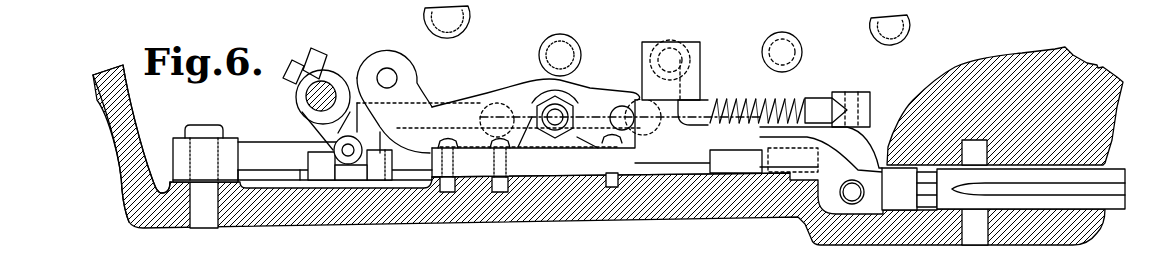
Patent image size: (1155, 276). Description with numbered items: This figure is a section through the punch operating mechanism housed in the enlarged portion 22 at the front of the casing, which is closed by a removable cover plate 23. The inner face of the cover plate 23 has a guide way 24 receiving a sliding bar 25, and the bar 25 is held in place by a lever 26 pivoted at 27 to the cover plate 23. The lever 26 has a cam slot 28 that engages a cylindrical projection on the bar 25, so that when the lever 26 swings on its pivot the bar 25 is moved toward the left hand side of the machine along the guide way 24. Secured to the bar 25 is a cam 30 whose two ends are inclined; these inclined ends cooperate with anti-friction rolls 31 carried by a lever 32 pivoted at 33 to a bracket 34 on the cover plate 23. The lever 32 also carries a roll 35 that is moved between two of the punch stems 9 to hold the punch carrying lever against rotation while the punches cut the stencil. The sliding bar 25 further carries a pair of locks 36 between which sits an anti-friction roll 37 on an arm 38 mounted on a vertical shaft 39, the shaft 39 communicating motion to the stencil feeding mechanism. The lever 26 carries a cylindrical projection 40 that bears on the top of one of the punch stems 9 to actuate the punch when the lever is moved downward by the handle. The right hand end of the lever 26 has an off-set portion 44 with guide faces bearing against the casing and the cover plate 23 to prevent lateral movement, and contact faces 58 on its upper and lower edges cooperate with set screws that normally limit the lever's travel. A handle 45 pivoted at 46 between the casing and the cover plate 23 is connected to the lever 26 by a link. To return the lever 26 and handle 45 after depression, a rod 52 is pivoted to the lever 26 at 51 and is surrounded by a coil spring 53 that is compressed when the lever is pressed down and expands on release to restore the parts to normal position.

The punch stem 9 is at (883, 27).
The enlarged portion 22 is at (119, 143).
The cover plate 23 is at (275, 211).
The guide way 24 is at (698, 186).
The sliding bar 25 is at (273, 184).
The lever 26 is at (272, 155).
The pivot 27 is at (206, 203).
The cam slot 28 is at (737, 153).
The cam 30 is at (571, 150).
The anti-friction rolls 31 is at (490, 97).
The lever 32 is at (520, 97).
The pivot 33 is at (558, 110).
The bracket 34 is at (515, 220).
The roll 35 is at (363, 67).
The locks 36 is at (378, 163).
The anti-friction roll 37 is at (360, 145).
The arm 38 is at (320, 83).
The vertical shaft 39 is at (308, 97).
The cylindrical projection 40 is at (690, 75).
The off-set portion 44 is at (848, 168).
The handle 45 is at (1050, 190).
The pivot 46 is at (983, 228).
The pivot 51 is at (857, 118).
The rod 52 is at (790, 103).
The coil spring 53 is at (738, 99).
The contact faces 58 is at (852, 195).